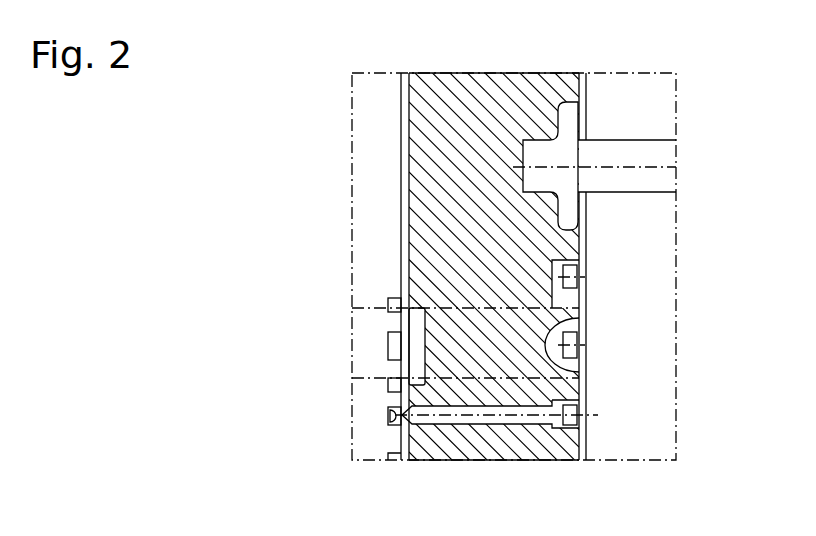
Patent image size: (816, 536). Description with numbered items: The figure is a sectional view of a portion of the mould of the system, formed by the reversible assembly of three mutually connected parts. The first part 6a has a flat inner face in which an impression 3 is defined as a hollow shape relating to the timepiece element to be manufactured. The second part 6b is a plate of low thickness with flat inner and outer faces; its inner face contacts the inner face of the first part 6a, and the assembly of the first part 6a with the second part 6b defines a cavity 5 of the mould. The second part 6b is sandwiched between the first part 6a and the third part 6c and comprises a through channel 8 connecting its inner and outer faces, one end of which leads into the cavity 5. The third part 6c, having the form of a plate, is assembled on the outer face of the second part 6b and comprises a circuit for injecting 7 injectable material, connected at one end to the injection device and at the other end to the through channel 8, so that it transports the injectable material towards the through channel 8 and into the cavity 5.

The first part 6a is at (362, 111).
The second part 6b is at (408, 220).
The third part 6c is at (432, 147).
The circuit for injecting 7 is at (555, 157).
The through channel 8 is at (400, 391).
The impression 3 is at (392, 404).
The cavity 5 is at (395, 427).